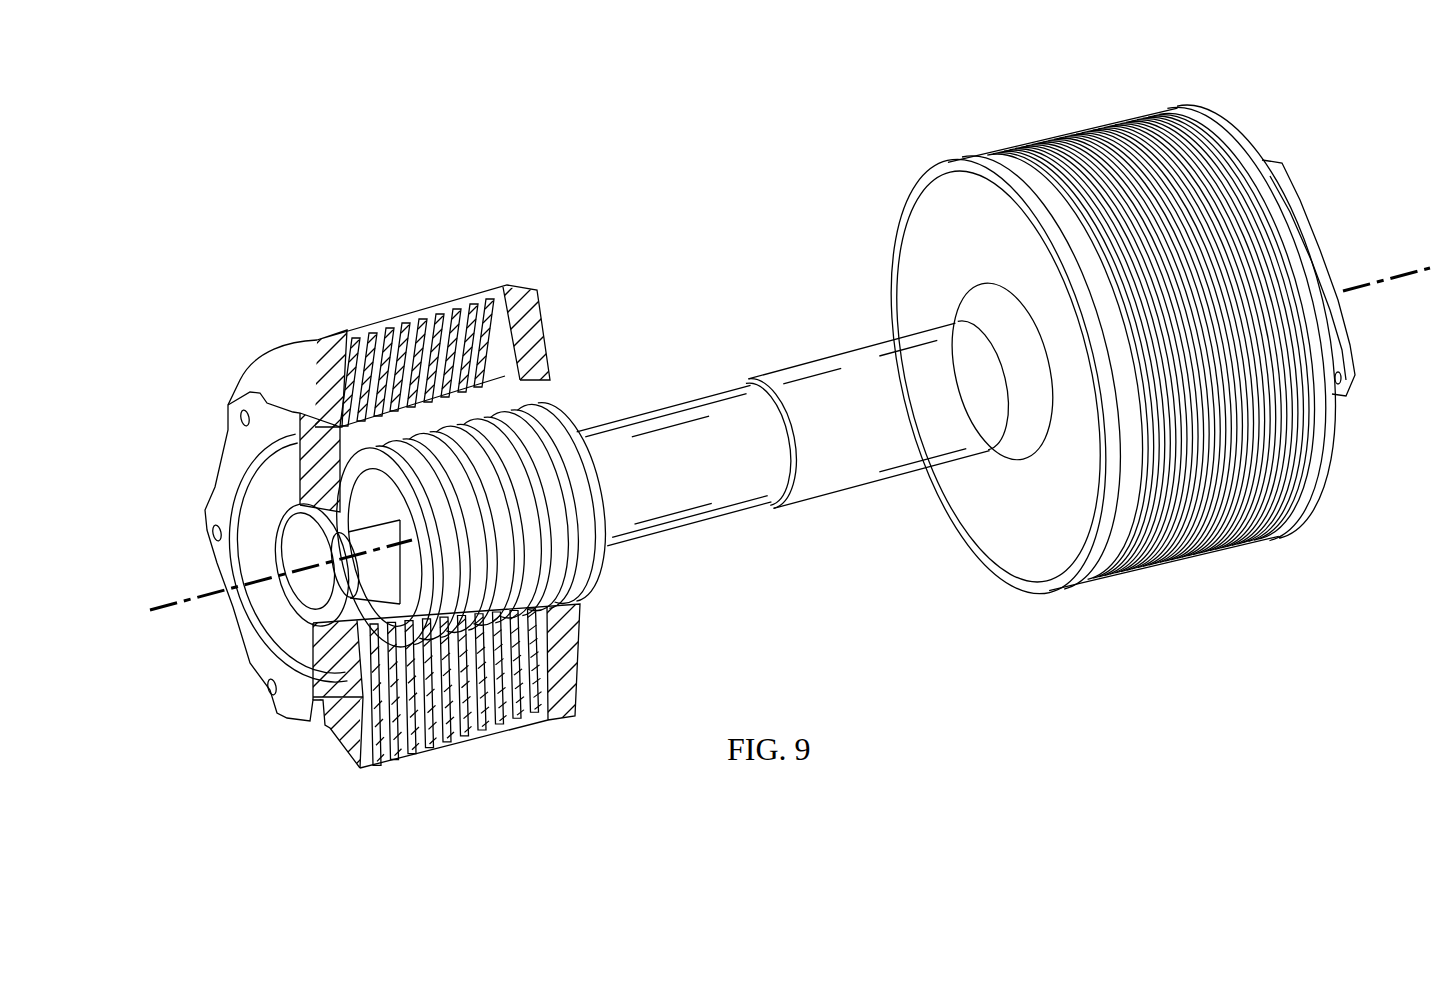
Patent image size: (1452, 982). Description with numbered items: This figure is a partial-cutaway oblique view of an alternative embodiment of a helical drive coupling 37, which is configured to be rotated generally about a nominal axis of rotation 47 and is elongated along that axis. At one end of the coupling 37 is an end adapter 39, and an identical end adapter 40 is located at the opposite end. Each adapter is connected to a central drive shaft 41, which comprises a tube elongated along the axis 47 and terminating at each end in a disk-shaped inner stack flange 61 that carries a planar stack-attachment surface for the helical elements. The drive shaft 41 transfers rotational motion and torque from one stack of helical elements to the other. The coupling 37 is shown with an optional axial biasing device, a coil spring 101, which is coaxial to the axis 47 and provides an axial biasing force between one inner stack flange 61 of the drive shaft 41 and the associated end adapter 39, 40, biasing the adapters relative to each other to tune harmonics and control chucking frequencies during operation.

The coupling 37 is at (623, 150).
The end adapter 39 is at (1328, 499).
The end adapter 40 is at (319, 753).
The central drive shaft 41 is at (782, 358).
The nominal axis of rotation 47 is at (178, 602).
The inner stack flange 61 is at (975, 527).
The coil spring 101 is at (601, 578).